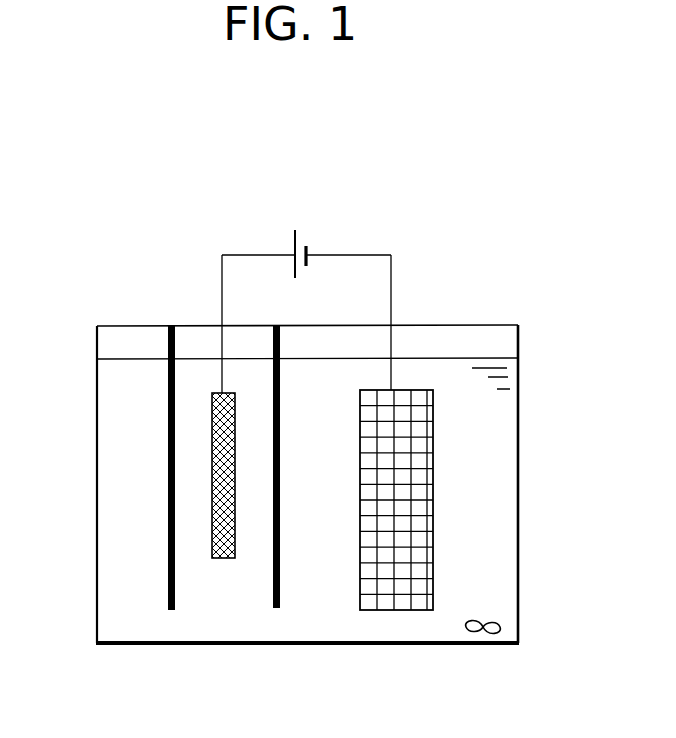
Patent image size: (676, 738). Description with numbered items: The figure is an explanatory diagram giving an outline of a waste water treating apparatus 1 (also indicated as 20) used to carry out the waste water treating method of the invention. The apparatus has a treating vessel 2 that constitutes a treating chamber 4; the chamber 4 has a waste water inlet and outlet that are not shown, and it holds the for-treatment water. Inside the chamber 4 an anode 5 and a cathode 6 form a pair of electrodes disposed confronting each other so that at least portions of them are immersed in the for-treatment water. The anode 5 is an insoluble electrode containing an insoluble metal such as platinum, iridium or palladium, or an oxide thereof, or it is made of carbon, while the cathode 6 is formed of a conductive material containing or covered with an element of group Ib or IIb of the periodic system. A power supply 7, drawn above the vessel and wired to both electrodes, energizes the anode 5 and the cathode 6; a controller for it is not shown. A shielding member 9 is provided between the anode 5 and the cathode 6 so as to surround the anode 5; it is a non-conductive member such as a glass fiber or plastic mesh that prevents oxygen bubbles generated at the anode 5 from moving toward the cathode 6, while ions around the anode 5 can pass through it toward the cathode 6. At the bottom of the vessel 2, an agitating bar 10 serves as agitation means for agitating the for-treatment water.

The waste water treating apparatus 1 is at (425, 190).
The electrolytic treatment apparatus (alternative embodiment) 20 is at (428, 186).
The treating vessel 2 is at (97, 610).
The treating chamber 4 is at (113, 432).
The anode 5 is at (220, 558).
The cathode 6 is at (416, 396).
The power supply 7 is at (295, 240).
The shielding member 9 is at (168, 518).
The agitating bar 10 is at (474, 640).